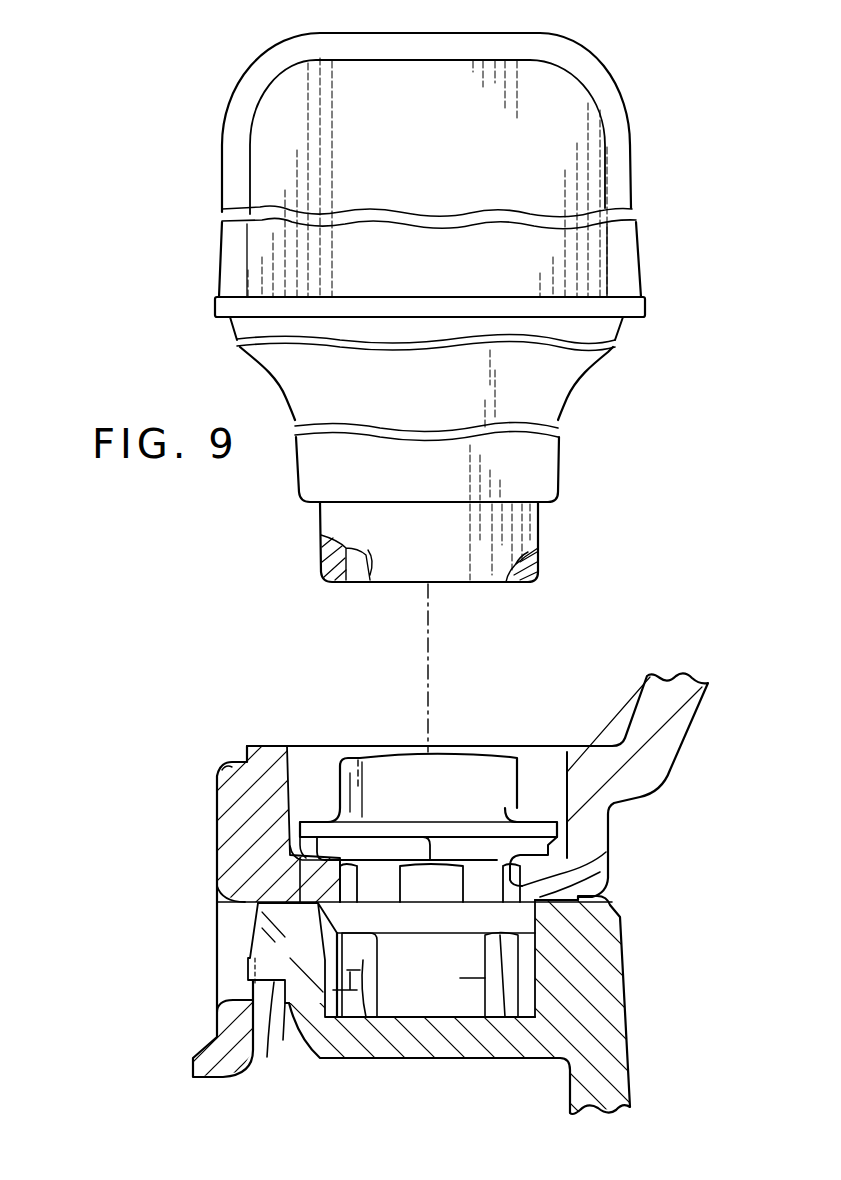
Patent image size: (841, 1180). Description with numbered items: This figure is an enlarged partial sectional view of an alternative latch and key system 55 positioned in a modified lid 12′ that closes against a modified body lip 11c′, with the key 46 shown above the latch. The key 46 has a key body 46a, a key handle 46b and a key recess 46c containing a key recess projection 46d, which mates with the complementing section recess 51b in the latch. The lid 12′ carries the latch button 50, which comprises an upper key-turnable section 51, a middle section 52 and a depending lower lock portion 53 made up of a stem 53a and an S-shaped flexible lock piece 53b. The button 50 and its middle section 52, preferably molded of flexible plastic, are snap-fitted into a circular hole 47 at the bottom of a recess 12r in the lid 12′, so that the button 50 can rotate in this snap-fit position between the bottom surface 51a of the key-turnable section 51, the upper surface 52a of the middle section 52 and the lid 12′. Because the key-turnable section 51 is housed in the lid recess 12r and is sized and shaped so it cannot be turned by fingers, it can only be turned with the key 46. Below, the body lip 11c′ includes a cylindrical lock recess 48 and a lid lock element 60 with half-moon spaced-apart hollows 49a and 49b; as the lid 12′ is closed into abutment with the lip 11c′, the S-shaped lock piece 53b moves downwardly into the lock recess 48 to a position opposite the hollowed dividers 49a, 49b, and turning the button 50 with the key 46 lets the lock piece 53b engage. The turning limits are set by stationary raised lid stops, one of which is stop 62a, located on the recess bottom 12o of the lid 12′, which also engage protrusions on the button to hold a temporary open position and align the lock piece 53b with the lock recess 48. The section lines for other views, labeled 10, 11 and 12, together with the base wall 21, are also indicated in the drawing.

The key 46 is at (625, 69).
The key body 46a is at (541, 471).
The key handle 46b is at (613, 116).
The key recess 46c is at (514, 570).
The key recess projection 46d is at (362, 545).
The latch and key system 55 is at (272, 611).
The section line 11- 11 is at (414, 640).
The housing / section line 12- 12 is at (133, 795).
The modified lid 12′ is at (216, 780).
The recess 12r is at (555, 757).
The recess bottom 12o is at (290, 856).
The section line 10- 10 is at (151, 940).
The latch button 50 is at (527, 746).
The key-turnable section 51 is at (494, 798).
The bottom surface of key-turnable section 51a is at (332, 857).
The complementing section recess 51b is at (357, 748).
The stationary raised lid stop 62a is at (322, 814).
The circular hole 47 is at (508, 872).
The middle section 52 is at (549, 938).
The upper surface of middle section 52a is at (590, 870).
The base wall 21 is at (603, 893).
The lid lock element 60 is at (552, 971).
The lower lock portion 53 is at (376, 1030).
The stem 53a is at (468, 933).
The S-shaped flexible lock piece 53b is at (462, 1000).
The cylindrical lock recess 48 is at (322, 950).
The half-moon hollow 49a is at (360, 951).
The half-moon hollow 49b is at (506, 996).
The modified body lip 11c′ is at (273, 1042).